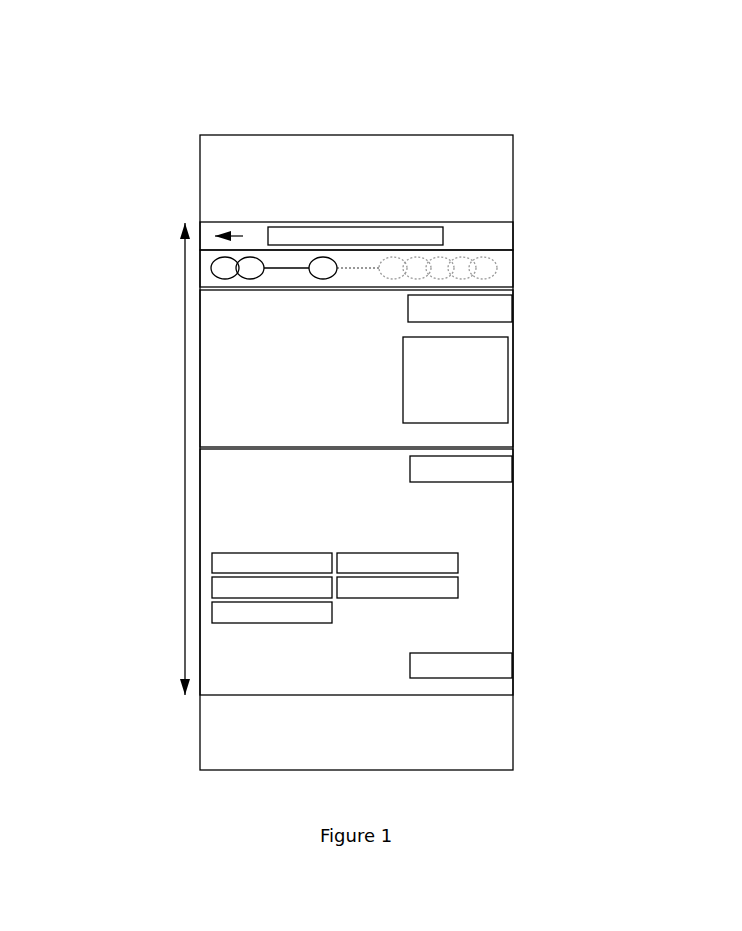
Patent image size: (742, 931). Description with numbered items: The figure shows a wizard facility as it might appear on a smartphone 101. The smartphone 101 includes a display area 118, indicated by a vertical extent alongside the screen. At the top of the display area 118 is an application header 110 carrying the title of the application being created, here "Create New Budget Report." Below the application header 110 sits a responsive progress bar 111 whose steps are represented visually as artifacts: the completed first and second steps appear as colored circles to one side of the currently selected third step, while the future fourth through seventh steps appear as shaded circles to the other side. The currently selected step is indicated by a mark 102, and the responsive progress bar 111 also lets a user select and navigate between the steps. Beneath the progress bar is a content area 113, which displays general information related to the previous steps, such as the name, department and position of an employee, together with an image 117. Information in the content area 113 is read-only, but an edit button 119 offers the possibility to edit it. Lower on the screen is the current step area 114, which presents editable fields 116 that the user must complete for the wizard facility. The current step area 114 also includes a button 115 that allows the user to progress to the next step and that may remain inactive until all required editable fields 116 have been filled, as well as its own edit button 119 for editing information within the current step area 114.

The smartphone 101 is at (198, 133).
The mark 102 is at (330, 282).
The application header 110 is at (515, 234).
The responsive progress bar 111 is at (515, 268).
The content area 113 is at (515, 365).
The current step area 114 is at (515, 510).
The button 115 is at (515, 662).
The editable fields 116 is at (482, 572).
The image 117 is at (455, 380).
The display area 118 is at (157, 459).
The edit button 119 is at (515, 308).